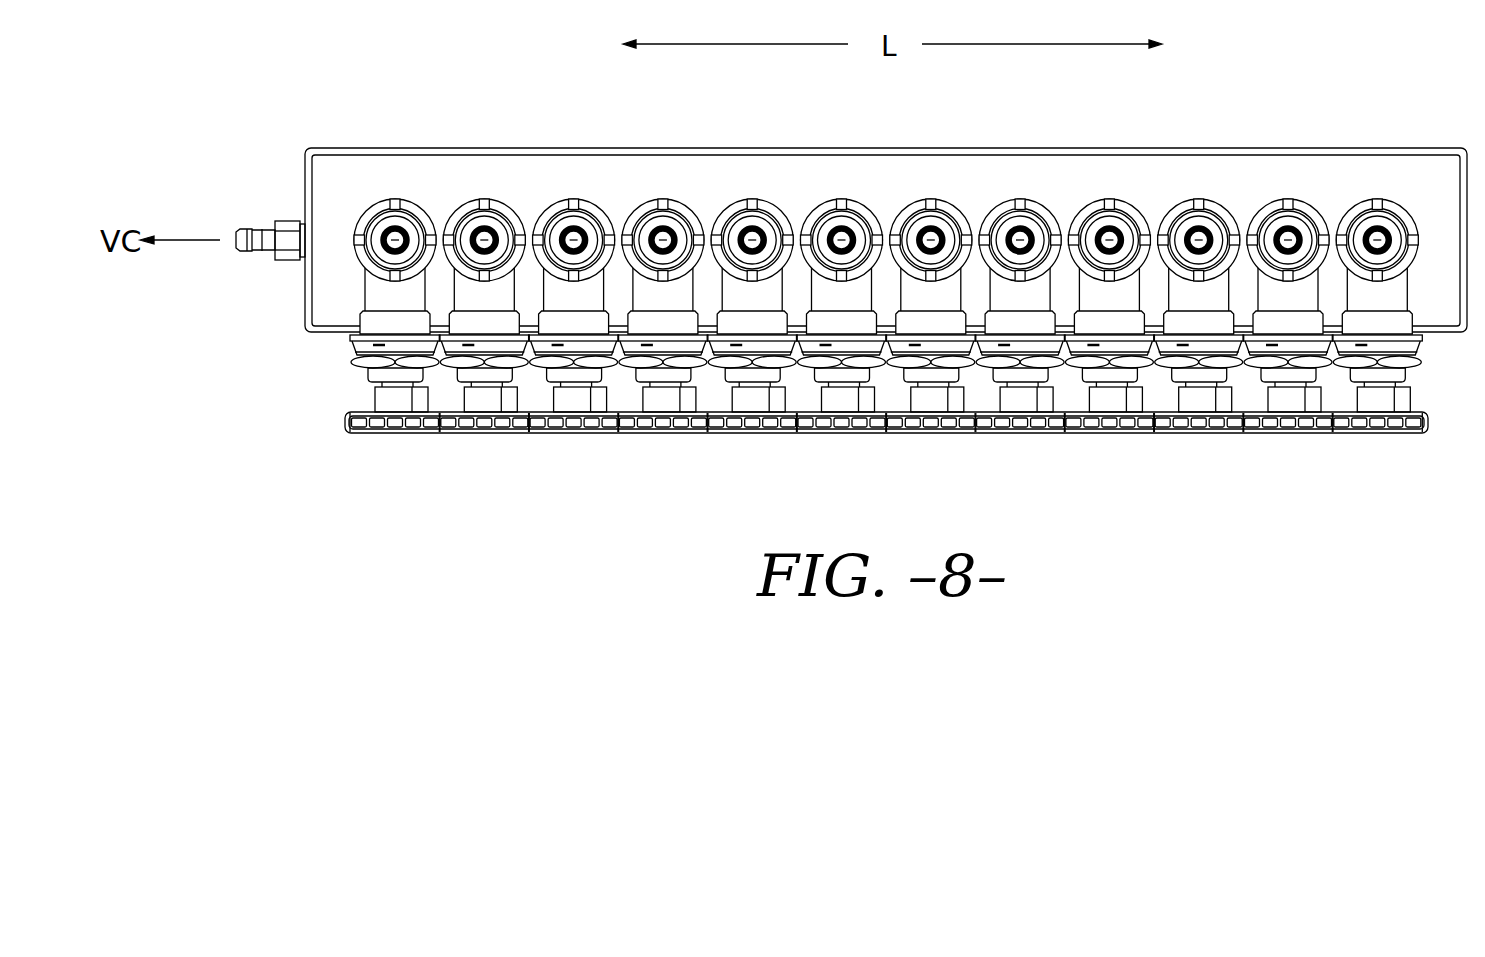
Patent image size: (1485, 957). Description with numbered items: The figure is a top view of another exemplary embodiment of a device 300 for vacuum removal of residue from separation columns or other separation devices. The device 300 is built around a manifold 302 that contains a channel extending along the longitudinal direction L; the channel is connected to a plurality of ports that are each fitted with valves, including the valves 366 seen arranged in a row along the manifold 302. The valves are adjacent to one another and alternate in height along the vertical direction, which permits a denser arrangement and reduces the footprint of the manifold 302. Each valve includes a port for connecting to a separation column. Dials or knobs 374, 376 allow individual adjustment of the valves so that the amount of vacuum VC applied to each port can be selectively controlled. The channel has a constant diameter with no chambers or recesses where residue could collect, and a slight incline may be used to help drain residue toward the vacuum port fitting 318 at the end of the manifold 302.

The device 300 is at (1320, 108).
The manifold 302 is at (347, 168).
The vacuum port fitting 318 is at (287, 252).
The valves 366 is at (383, 213).
The dials or knobs 374 is at (392, 434).
The dials or knobs 376 is at (483, 434).